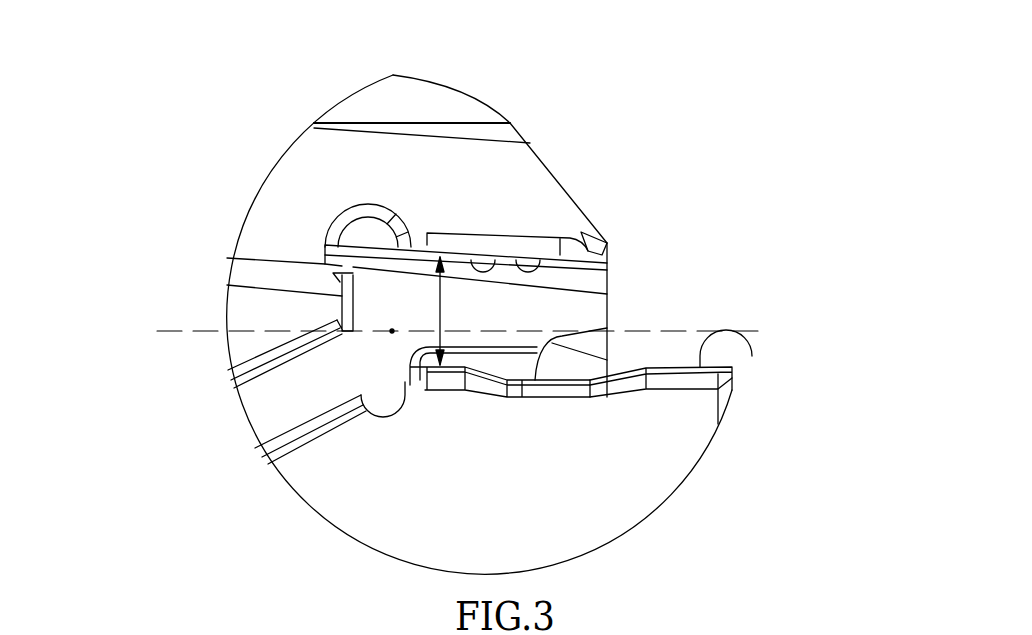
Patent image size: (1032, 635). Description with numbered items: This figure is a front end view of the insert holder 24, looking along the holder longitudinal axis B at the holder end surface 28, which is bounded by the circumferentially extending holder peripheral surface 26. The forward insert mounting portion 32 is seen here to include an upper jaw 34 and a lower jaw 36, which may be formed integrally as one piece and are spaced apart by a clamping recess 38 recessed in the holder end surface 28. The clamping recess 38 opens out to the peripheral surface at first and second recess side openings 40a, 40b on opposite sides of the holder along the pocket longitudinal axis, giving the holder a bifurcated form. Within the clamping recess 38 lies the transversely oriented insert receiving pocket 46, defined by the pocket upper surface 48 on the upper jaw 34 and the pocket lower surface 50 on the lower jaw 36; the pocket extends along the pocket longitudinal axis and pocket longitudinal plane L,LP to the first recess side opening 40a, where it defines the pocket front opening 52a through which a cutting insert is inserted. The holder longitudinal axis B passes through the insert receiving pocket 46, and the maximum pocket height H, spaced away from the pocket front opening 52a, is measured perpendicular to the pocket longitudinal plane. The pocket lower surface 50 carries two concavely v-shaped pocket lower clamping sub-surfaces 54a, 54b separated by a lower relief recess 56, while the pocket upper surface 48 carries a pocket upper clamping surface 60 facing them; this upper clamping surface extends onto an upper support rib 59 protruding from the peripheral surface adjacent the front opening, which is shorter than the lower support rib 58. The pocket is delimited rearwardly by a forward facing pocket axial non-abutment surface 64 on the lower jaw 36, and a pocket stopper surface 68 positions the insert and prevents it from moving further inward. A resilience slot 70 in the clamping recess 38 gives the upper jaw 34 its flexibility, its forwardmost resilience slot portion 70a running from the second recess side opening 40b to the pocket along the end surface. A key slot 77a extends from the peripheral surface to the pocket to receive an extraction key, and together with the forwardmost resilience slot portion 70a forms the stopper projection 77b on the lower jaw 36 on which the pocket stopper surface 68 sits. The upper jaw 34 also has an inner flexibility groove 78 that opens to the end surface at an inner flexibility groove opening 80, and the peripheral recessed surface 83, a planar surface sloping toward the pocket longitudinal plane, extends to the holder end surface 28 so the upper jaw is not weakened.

The insert holder 24 is at (406, 329).
The holder peripheral surface 26 is at (465, 324).
The holder end surface 28 is at (650, 494).
The insert mounting portion 32 is at (397, 332).
The upper jaw 34 is at (422, 167).
The lower jaw 36 is at (465, 335).
The clamping recess 38 is at (544, 308).
The first recess side opening 40a is at (623, 262).
The second recess side opening 40b is at (222, 272).
The insert receiving pocket 46 is at (658, 320).
The pocket upper surface 48 is at (524, 233).
The pocket lower surface 50 is at (752, 356).
The pocket front opening 52a is at (677, 279).
The first pocket lower clamping sub-surface 54a is at (682, 380).
The second pocket lower clamping sub-surface 54b is at (450, 380).
The lower relief recess 56 is at (558, 368).
The lower support rib 58 is at (705, 413).
The upper support rib 59 is at (612, 212).
The pocket upper clamping surface 60 is at (473, 233).
The pocket axial non-abutment surface 64 is at (516, 322).
The pocket stopper surface 68 is at (356, 307).
The resilience slot 70 is at (570, 271).
The forwardmost resilience slot portion 70a is at (263, 267).
The key slot 77a is at (295, 405).
The stopper projection 77b is at (275, 315).
The inner flexibility groove 78 is at (376, 233).
The inner flexibility groove opening 80 is at (346, 224).
The peripheral recessed surface 83 is at (505, 135).
The maximum pocket height H is at (447, 324).
The holder longitudinal axis B is at (392, 333).
The pocket longitudinal axis and pocket longitudinal plane L,LP is at (735, 331).